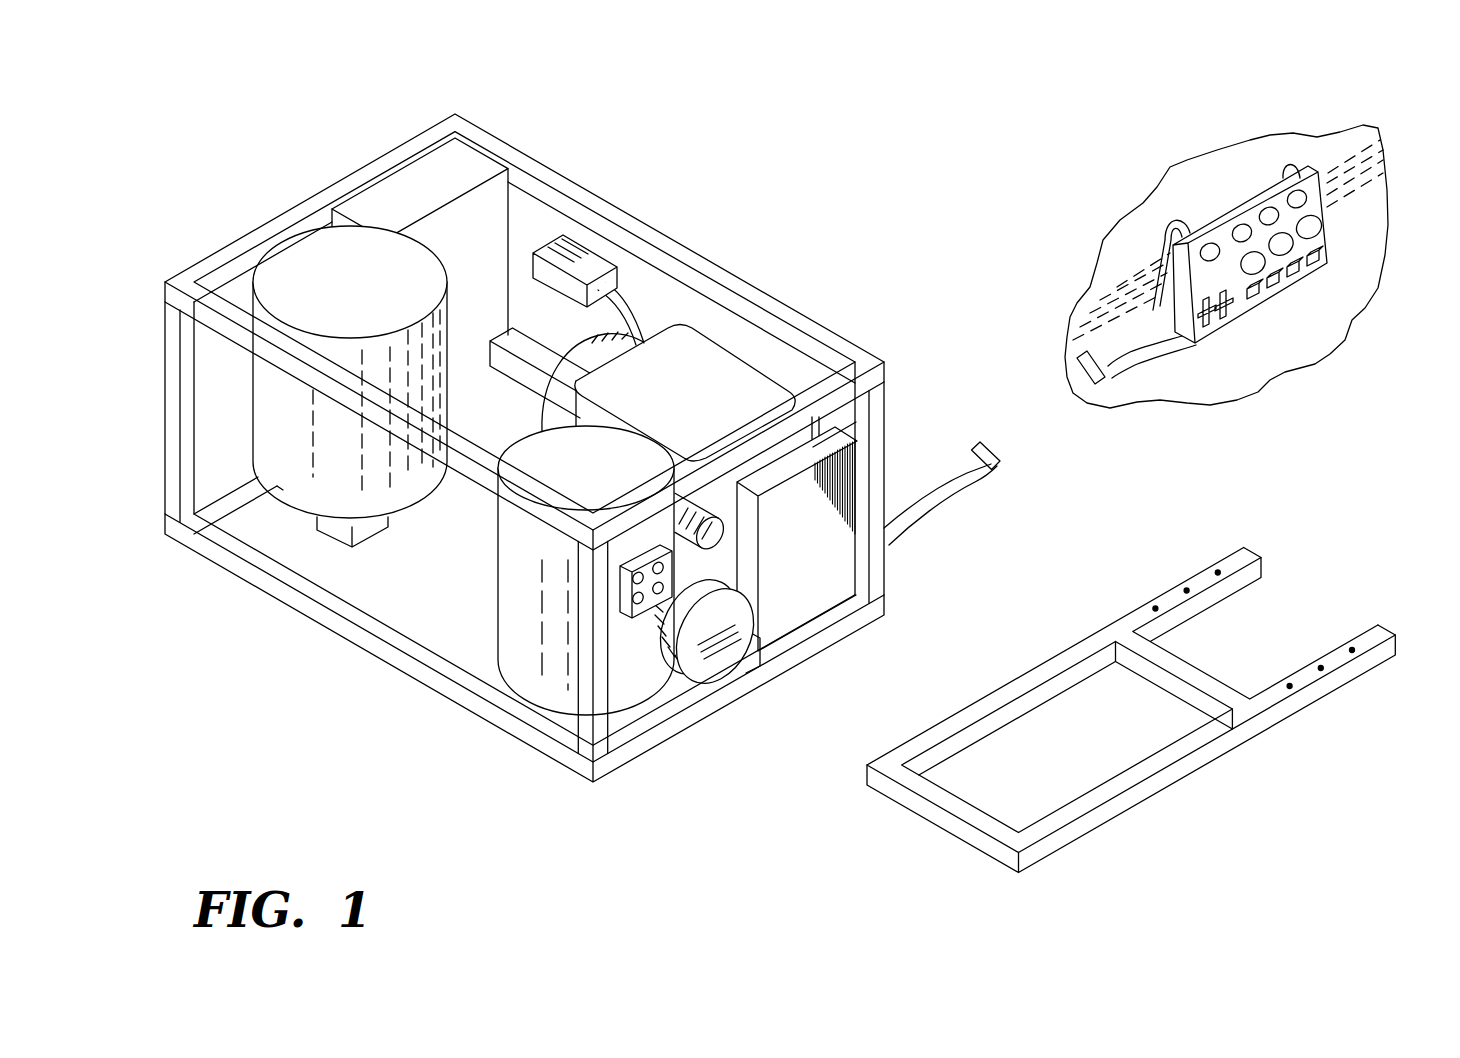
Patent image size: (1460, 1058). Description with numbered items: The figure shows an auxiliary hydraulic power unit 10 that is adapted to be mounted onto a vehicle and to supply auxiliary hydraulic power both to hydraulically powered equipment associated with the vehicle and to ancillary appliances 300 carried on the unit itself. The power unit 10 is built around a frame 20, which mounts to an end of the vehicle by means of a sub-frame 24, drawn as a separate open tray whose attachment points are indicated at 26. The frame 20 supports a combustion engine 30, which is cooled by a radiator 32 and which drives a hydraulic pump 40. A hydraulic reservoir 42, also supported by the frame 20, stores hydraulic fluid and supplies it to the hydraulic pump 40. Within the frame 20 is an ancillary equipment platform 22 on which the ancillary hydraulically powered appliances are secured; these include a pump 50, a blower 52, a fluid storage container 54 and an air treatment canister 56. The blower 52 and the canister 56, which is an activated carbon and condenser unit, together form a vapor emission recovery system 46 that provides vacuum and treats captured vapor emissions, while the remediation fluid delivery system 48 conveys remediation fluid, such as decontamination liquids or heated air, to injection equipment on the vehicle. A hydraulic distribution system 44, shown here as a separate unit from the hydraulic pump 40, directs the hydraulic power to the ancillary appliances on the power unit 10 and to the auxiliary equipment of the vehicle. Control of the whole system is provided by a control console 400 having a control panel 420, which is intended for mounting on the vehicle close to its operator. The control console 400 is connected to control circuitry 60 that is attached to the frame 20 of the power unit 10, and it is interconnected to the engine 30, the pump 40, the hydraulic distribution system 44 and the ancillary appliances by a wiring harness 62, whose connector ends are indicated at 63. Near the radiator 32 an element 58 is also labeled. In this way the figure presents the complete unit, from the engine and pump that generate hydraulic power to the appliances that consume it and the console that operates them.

The auxiliary hydraulic power unit 10 is at (290, 803).
The frame 20 is at (737, 280).
The ancillary equipment platform 22 is at (410, 587).
The sub-frame 24 is at (1157, 783).
The mounting holes 26 is at (1290, 686).
The combustion engine 30 is at (763, 350).
The radiator 32 is at (830, 477).
The hydraulic pump 40 is at (528, 340).
The hydraulic reservoir 42 is at (474, 153).
The hydraulic distribution system 44 is at (622, 612).
The vapor emission recovery system 46 is at (752, 745).
The remediation fluid delivery system 48 is at (225, 407).
The pump 50 is at (335, 522).
The blower 52 is at (742, 633).
The fluid storage container 54 is at (285, 257).
The air treatment canister 56 is at (498, 546).
The radiator 58 is at (724, 538).
The control circuitry 60 is at (596, 258).
The wiring harness 62 is at (630, 303).
The connector plug 63 is at (1000, 447).
The ancillary appliances 300 is at (441, 592).
The control console 400 is at (1215, 135).
The control panel 420 is at (1325, 243).